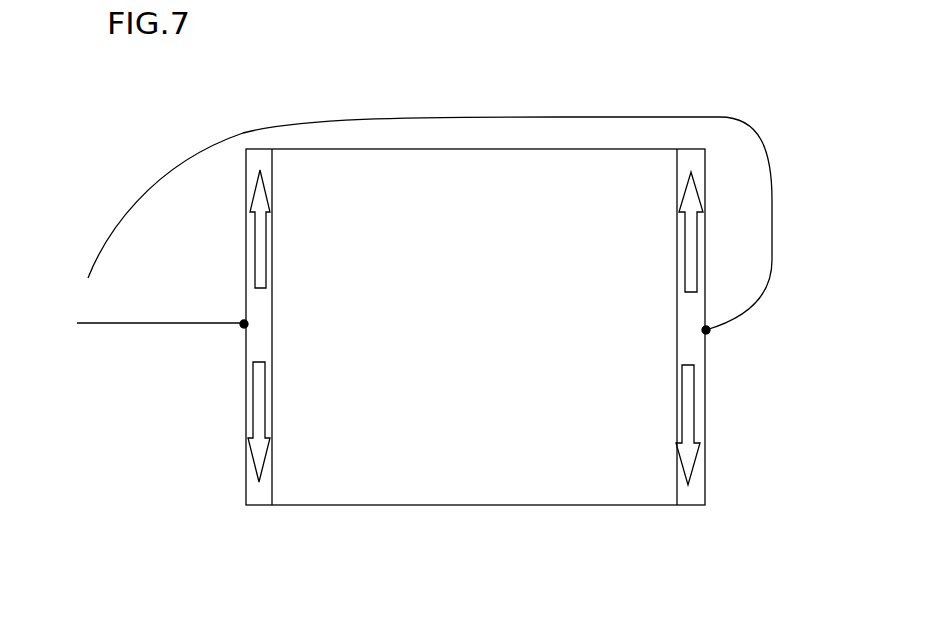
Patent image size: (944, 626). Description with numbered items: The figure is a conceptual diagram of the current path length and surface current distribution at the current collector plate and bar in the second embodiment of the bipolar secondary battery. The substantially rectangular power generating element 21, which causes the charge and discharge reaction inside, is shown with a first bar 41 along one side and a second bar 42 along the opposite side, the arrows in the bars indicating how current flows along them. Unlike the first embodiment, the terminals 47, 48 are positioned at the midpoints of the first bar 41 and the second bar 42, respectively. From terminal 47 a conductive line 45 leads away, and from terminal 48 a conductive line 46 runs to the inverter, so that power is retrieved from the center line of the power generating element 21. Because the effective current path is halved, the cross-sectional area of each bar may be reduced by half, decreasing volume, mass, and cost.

The power generating element 21 is at (487, 463).
The first bar element 41 is at (692, 493).
The second bar element 42 is at (257, 498).
The conductive line 45 is at (775, 215).
The conductive line 46 is at (127, 323).
The terminal 47 is at (708, 334).
The terminal 48 is at (238, 313).